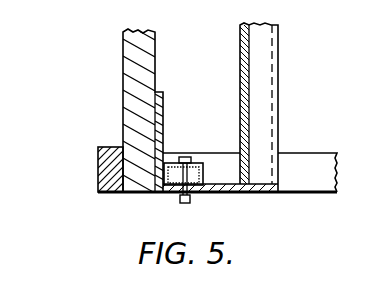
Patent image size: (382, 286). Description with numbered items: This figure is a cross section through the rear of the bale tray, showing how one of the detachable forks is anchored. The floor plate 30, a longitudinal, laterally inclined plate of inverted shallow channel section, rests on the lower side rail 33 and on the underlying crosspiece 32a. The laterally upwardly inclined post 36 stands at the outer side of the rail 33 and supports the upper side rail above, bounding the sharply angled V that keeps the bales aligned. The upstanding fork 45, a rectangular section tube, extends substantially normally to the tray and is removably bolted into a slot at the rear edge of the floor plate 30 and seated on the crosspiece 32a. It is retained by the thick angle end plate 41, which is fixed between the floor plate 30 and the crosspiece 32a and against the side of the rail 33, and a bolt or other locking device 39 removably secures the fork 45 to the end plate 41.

The floor plate 30 is at (263, 78).
The crosspiece 32a is at (308, 173).
The lower side rail 33 is at (133, 70).
The post 36 is at (98, 149).
The locking device 39 is at (181, 198).
The angle end plate 41 is at (212, 192).
The fork 45 is at (205, 162).